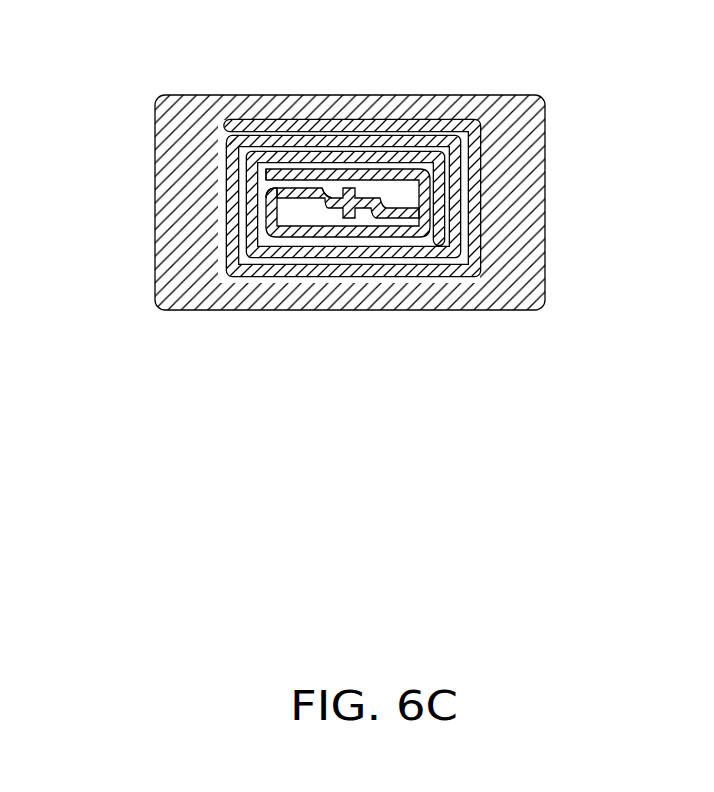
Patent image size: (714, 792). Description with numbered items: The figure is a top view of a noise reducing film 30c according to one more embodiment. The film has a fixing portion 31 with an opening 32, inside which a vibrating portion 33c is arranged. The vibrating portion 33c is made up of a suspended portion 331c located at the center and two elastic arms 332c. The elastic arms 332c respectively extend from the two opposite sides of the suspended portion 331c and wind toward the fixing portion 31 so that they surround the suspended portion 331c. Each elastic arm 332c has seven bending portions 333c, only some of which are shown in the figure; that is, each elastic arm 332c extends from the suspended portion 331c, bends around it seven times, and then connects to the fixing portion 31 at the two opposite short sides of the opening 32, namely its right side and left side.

The noise reducing film 30c is at (150, 68).
The fixing portion 31 is at (547, 205).
The opening 32 is at (430, 116).
The vibrating portion 33c is at (336, 170).
The suspended portion 331c is at (351, 217).
The elastic arms 332c is at (298, 233).
The bending portions 333c is at (338, 195).